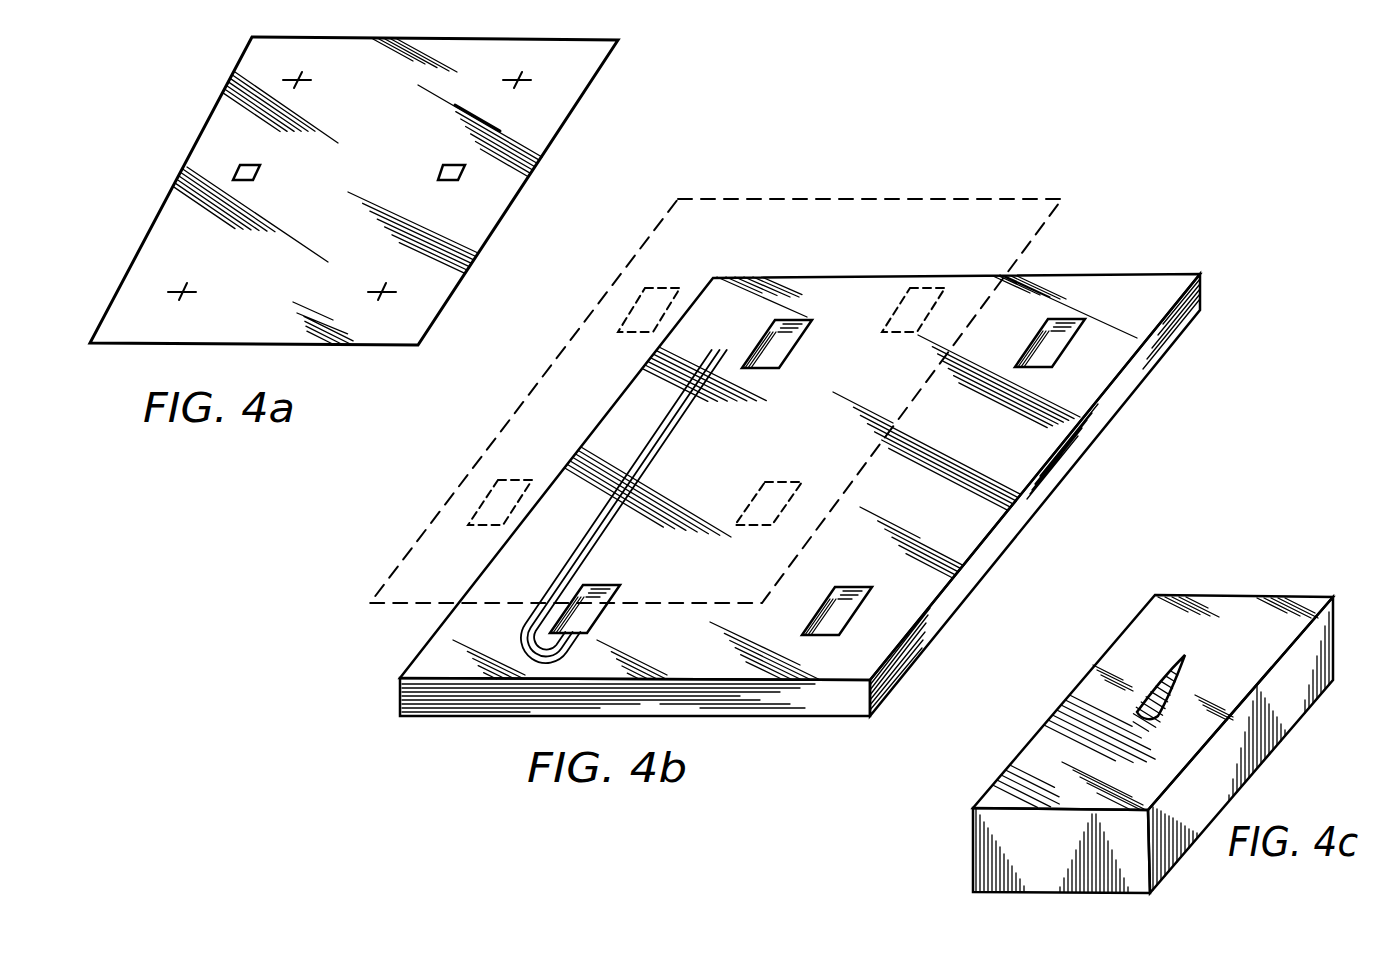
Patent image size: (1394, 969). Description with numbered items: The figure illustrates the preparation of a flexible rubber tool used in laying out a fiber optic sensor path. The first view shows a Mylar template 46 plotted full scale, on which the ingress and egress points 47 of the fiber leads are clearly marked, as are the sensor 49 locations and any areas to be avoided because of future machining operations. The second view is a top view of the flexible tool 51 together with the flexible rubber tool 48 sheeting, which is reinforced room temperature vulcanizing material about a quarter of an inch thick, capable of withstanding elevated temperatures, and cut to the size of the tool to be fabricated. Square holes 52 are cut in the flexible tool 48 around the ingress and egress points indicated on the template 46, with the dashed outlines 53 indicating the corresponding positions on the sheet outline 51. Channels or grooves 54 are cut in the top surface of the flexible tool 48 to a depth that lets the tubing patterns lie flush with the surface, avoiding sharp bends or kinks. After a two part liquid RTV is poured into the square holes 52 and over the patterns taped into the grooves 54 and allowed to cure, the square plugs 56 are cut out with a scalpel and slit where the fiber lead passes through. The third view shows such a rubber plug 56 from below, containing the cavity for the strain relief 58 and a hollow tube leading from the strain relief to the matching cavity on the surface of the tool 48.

In FIG. 4a, the template 46 is at (543, 152).
In FIG. 4a, the ingress and egress points 47 is at (306, 82).
In FIG. 4a, the sensor locations 49 is at (262, 174).
In FIG. 4b, the flexible rubber tool 48 is at (1088, 384).
In FIG. 4b, the flexible tool 51 is at (1020, 199).
In FIG. 4b, the square holes 52 is at (836, 322).
In FIG. 4b, the aperture positions 53 is at (662, 288).
In FIG. 4b, the channels or grooves 54 is at (674, 430).
In FIG. 4c, the square plug 56 is at (1171, 646).
In FIG. 4c, the cavity for the strain relief 58 is at (1187, 660).